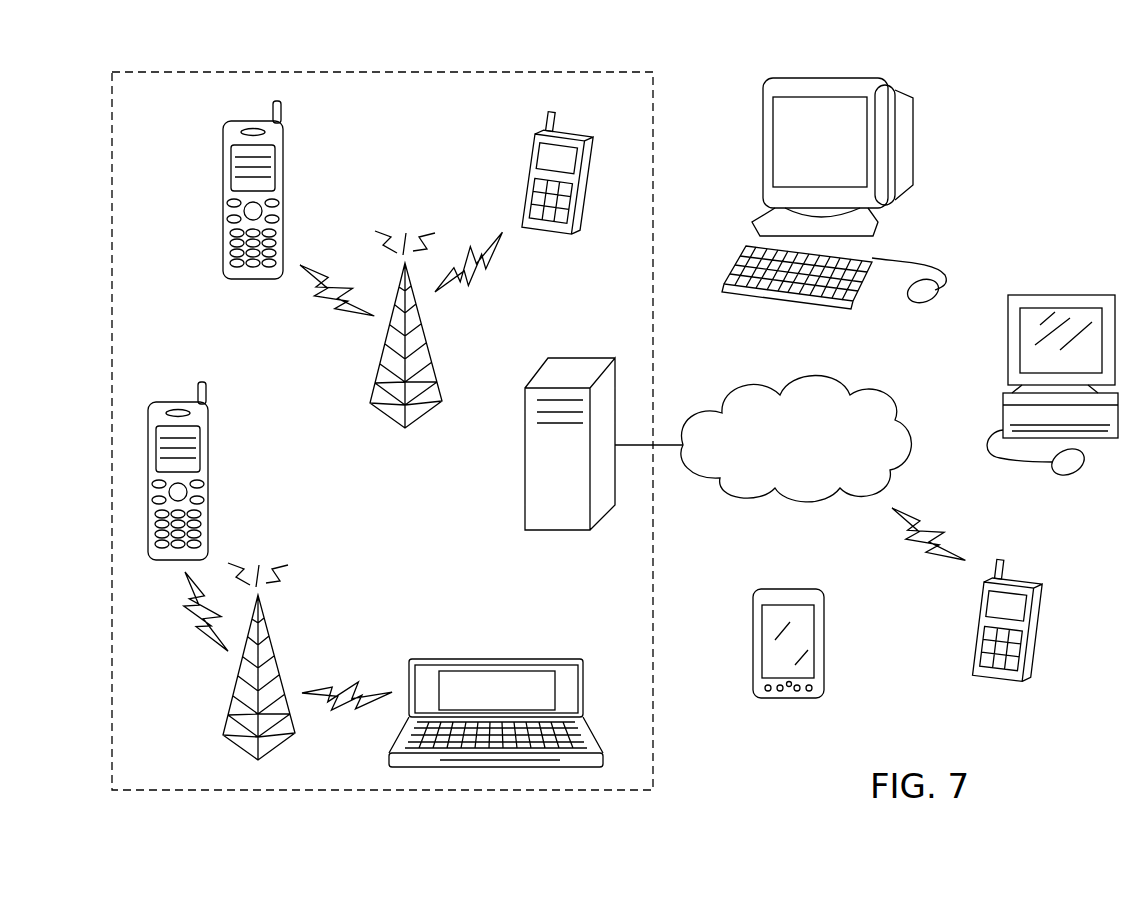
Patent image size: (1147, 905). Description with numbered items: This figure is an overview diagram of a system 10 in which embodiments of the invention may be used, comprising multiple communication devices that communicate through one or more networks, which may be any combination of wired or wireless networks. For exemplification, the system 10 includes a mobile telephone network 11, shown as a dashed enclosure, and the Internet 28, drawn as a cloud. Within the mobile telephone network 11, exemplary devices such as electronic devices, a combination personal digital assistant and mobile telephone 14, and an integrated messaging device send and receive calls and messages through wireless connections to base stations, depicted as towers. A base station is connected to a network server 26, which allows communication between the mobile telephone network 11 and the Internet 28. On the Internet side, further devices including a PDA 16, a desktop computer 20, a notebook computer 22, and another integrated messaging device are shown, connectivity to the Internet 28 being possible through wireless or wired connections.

The system 10 is at (1105, 544).
The mobile telephone network 11 is at (158, 114).
The combination personal digital assistant and mobile telephone 14 is at (497, 661).
The PDA 16 is at (826, 643).
The desktop computer 20 is at (913, 130).
The notebook computer 22 is at (1060, 296).
The network server 26 is at (524, 458).
The Internet 28 is at (833, 377).